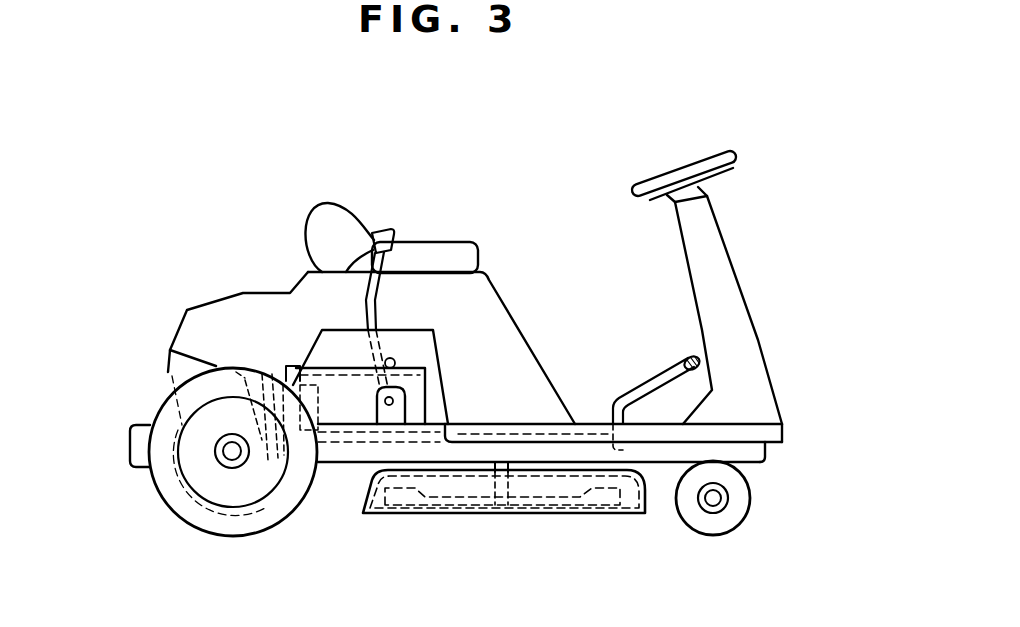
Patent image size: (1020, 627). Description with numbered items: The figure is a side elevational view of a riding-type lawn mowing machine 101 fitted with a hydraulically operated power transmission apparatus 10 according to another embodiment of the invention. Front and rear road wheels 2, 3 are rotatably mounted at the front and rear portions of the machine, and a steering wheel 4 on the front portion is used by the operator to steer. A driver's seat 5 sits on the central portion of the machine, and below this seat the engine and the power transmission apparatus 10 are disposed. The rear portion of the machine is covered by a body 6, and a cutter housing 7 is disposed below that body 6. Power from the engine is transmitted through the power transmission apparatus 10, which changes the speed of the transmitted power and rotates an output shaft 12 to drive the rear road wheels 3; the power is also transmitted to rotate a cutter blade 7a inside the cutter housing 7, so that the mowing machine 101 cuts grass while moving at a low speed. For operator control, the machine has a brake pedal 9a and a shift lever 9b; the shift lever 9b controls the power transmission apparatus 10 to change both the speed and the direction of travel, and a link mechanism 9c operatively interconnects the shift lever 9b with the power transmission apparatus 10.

The riding-type lawn mowing machine 101 is at (505, 202).
The front road wheel 2 is at (724, 537).
The rear road wheel 3 is at (208, 537).
The steering wheel 4 is at (710, 150).
The driver's seat 5 is at (440, 242).
The body 6 is at (490, 305).
The cutter housing 7 is at (650, 505).
The cutter blade 7a is at (543, 512).
The brake pedal 9a is at (687, 345).
The shift lever 9b is at (375, 228).
The link mechanism 9c is at (292, 370).
The hydraulically operated power transmission apparatus 10 is at (168, 371).
The output shaft 12 is at (243, 466).